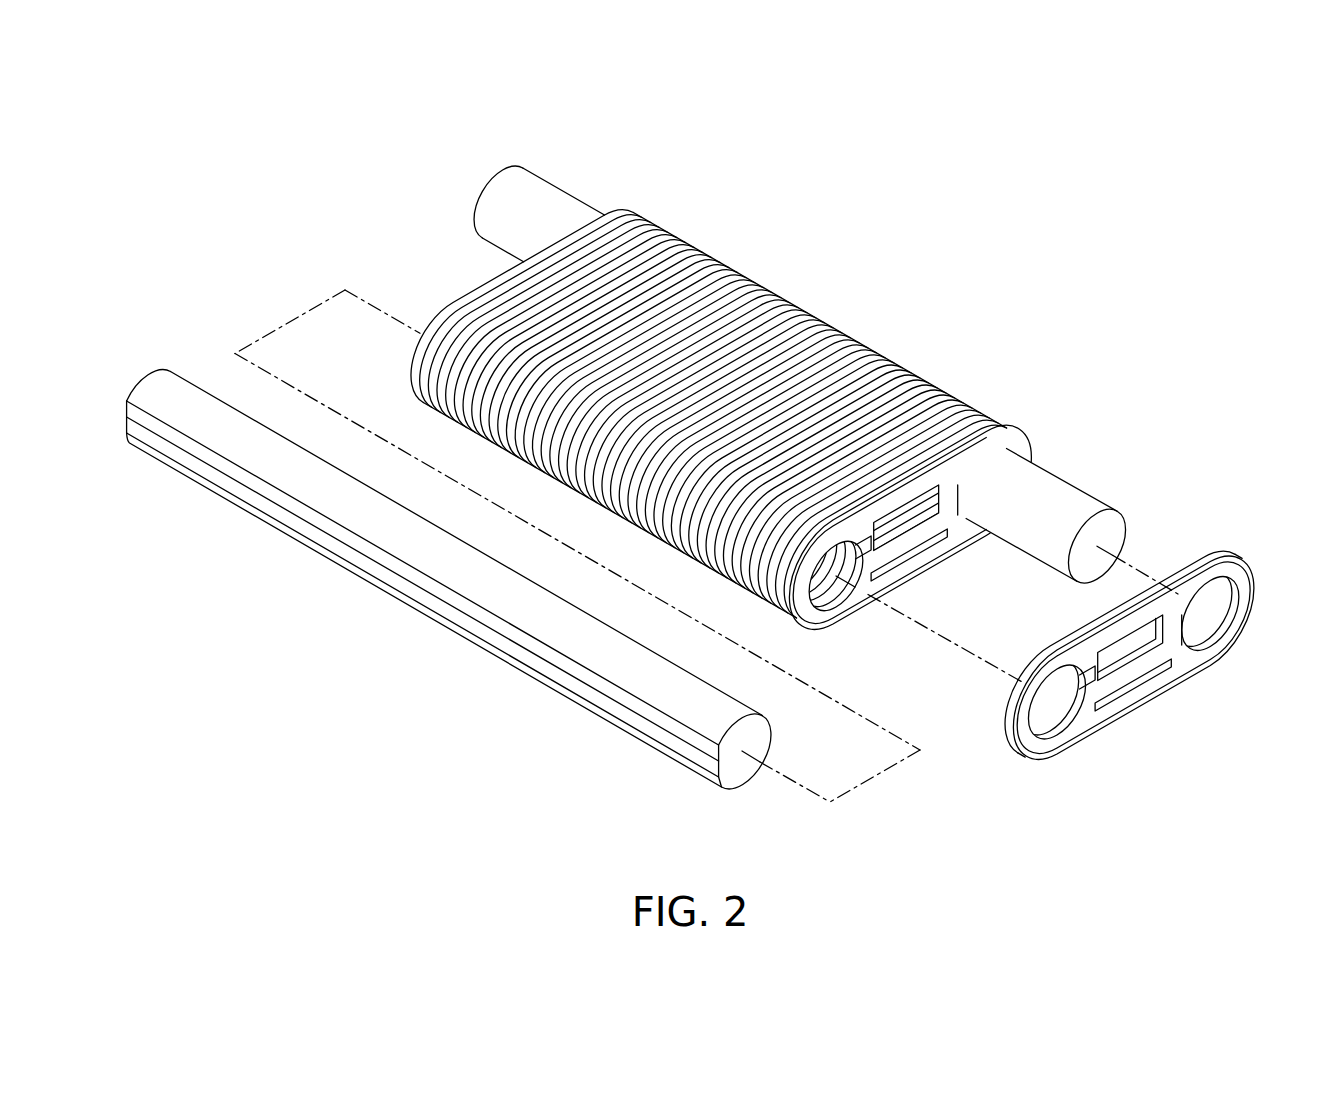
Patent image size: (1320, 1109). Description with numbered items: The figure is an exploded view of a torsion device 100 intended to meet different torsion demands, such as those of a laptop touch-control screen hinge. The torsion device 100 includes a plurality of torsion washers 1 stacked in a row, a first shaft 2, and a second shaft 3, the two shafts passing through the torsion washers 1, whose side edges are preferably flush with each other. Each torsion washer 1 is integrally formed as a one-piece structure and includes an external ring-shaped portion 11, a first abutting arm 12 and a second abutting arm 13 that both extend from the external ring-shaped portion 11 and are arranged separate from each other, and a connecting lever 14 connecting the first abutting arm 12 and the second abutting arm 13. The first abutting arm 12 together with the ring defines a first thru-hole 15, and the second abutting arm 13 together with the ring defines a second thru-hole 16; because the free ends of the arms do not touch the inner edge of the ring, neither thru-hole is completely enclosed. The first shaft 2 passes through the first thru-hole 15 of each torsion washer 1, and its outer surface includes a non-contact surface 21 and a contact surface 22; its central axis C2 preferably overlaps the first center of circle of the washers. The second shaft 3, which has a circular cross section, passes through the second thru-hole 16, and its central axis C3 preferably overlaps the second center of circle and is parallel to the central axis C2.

The torsion device 100 is at (1160, 167).
The torsion washer 1 is at (1027, 443).
The first shaft 2 is at (420, 616).
The second shaft 3 is at (569, 192).
The external ring-shaped portion 11 is at (1018, 721).
The first abutting arm 12 is at (1088, 670).
The second abutting arm 13 is at (1177, 627).
The connecting lever 14 is at (1147, 668).
The first thru-hole 15 is at (1056, 706).
The second thru-hole 16 is at (1215, 610).
The non-contact surface 21 is at (690, 748).
The contact surface 22 is at (627, 668).
The central axis of the first shaft C2 is at (804, 790).
The central axis of the second shaft C3 is at (1158, 578).